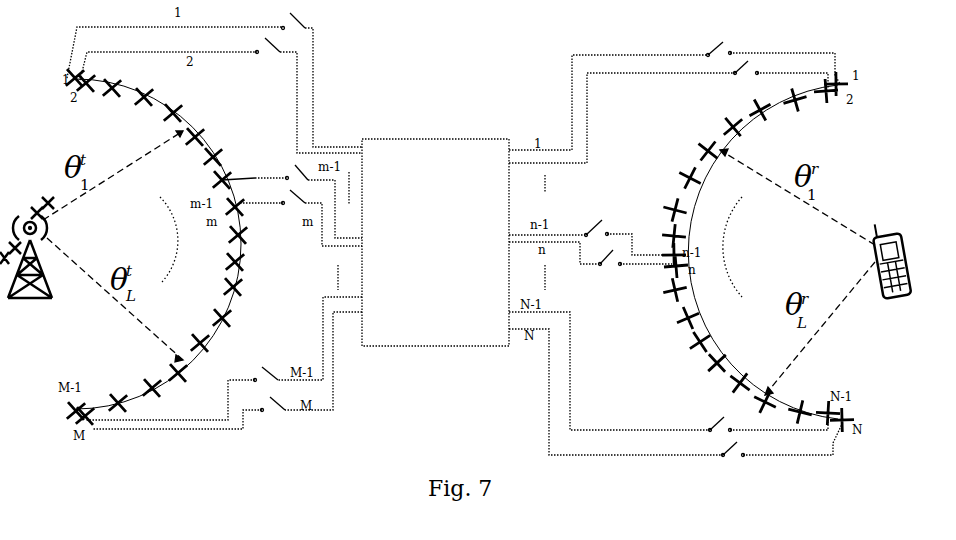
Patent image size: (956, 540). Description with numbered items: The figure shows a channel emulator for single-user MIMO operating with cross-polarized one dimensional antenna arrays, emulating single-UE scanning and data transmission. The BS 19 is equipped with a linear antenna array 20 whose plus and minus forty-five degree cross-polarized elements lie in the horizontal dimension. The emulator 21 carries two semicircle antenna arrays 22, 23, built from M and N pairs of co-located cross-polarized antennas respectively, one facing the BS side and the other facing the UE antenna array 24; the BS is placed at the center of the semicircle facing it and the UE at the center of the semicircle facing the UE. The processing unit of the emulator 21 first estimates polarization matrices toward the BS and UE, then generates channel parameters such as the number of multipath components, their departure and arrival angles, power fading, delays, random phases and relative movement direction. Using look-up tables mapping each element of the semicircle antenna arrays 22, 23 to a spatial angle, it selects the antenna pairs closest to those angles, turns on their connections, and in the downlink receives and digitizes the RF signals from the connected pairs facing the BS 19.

The BS 19 is at (29, 269).
The linear antenna array 20 is at (27, 227).
The emulator 21 is at (435, 233).
The semicircle antenna array 22 is at (168, 247).
The semicircle antenna array 23 is at (758, 252).
The UE antenna array 24 is at (891, 259).